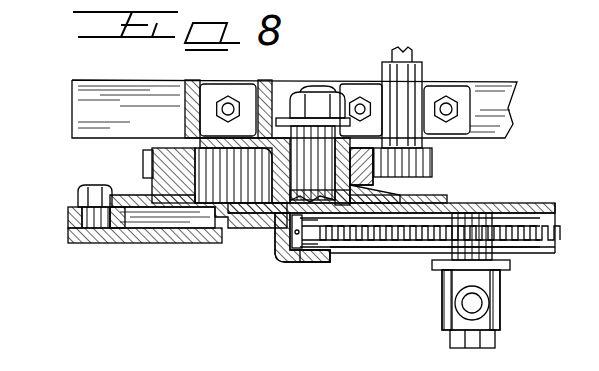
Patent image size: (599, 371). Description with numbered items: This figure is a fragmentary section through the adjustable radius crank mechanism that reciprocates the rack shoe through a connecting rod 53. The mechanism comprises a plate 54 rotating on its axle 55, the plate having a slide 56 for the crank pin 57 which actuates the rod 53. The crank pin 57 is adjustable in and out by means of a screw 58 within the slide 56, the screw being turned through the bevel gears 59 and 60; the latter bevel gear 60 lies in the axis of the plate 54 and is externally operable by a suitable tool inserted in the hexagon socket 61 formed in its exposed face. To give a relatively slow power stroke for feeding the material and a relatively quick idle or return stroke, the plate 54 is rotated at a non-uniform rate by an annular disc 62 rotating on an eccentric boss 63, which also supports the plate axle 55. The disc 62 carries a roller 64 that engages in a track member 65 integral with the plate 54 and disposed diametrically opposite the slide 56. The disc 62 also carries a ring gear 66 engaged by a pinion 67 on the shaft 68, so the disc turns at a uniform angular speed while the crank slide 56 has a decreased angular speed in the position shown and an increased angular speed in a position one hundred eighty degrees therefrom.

The connecting rod 53 is at (478, 303).
The plate 54 is at (480, 208).
The axle 55 is at (303, 153).
The slide 56 is at (530, 268).
The crank pin 57 is at (468, 246).
The screw 58 is at (400, 250).
The bevel gear 59 is at (282, 247).
The bevel gear 60 is at (333, 256).
The hexagon socket 61 is at (315, 263).
The annular disc 62 is at (450, 199).
The eccentric boss 63 is at (203, 163).
The roller 64 is at (72, 222).
The track member 65 is at (140, 243).
The ring gear 66 is at (382, 196).
The pinion 67 is at (425, 169).
The shaft 68 is at (410, 60).